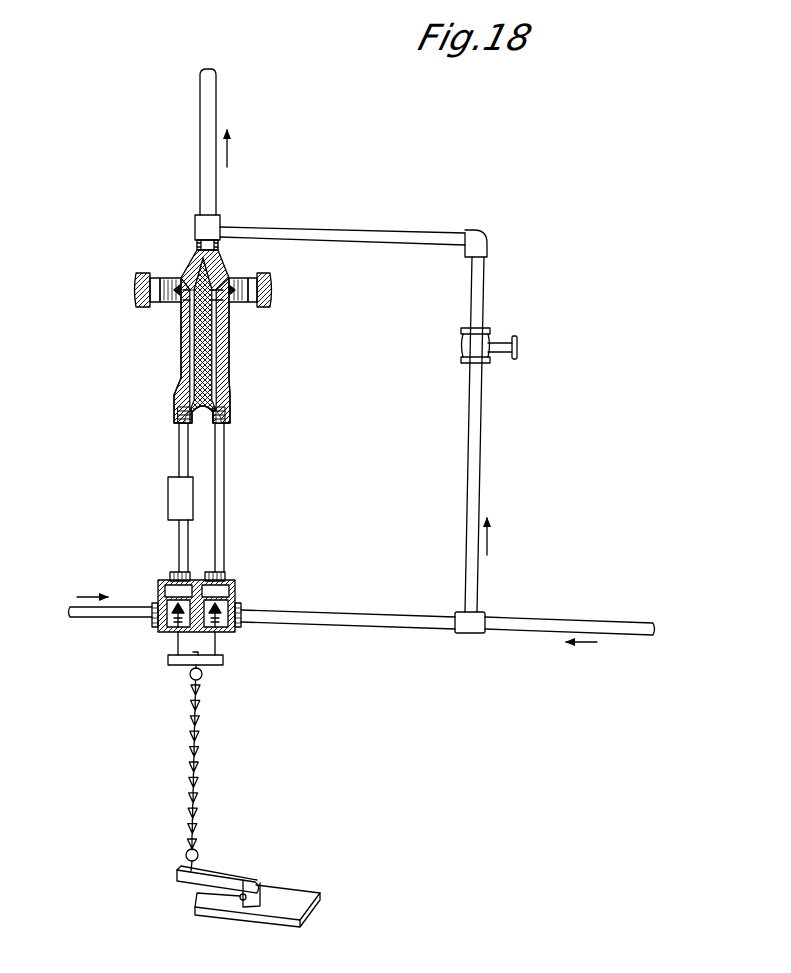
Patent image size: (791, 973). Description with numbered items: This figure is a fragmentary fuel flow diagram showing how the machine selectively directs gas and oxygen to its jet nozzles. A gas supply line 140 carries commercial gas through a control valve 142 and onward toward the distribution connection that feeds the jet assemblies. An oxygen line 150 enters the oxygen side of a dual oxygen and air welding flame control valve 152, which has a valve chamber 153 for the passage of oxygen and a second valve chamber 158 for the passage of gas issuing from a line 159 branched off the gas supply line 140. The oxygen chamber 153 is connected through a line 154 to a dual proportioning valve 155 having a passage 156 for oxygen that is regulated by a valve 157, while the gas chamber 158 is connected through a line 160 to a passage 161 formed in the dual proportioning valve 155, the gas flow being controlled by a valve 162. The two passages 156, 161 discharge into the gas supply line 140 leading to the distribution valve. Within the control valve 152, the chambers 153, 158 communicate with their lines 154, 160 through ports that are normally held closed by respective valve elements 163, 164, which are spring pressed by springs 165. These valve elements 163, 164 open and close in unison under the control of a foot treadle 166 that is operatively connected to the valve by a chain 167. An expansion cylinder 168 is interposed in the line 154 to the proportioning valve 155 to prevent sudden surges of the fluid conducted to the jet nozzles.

The gas supply line 140 is at (216, 92).
The control valve 142 is at (490, 340).
The oxygen line 150 is at (73, 618).
The dual oxygen and air welding flame control valve 152 is at (240, 573).
The valve chamber 153 is at (155, 628).
The line 154 is at (180, 440).
The dual proportioning valve 155 is at (199, 331).
The passage 156 is at (184, 330).
The valve 157 is at (140, 281).
The valve chamber 158 is at (240, 606).
The line 159 is at (413, 627).
The line 160 is at (225, 443).
The passage 161 is at (214, 334).
The valve 162 is at (266, 284).
The valve element 163 is at (170, 597).
The valve element 164 is at (230, 592).
The spring 165 is at (160, 640).
The foot treadle 166 is at (228, 880).
The chain 167 is at (200, 769).
The expansion cylinder 168 is at (172, 490).